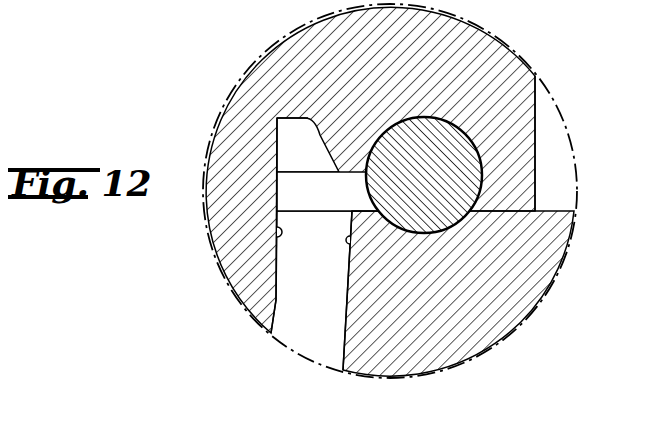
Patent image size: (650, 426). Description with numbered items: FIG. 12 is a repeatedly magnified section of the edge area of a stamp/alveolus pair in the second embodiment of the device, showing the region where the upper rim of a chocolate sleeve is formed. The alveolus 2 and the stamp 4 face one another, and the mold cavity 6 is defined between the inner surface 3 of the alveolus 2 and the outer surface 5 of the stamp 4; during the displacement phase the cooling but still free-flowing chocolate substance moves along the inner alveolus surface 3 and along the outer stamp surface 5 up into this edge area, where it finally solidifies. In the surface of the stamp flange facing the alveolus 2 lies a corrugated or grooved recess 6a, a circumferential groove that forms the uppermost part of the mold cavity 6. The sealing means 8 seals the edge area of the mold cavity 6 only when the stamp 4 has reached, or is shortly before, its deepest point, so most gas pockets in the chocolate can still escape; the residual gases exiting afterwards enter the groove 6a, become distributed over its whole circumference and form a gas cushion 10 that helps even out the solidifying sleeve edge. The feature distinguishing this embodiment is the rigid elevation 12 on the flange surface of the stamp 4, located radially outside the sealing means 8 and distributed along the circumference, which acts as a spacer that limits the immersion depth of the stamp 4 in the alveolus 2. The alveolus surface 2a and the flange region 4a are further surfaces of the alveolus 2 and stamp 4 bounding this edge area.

The alveolus 2 is at (503, 305).
The groove of body 2a is at (354, 242).
The inner surface of the alveolus 3 is at (350, 268).
The stamp 4 is at (549, 113).
The groove of housing 4a is at (276, 234).
The outer surface of the stamp 5 is at (277, 300).
The mold cavity 6 is at (292, 266).
The corrugated or grooved recess 6a is at (305, 121).
The sealing means 8 is at (384, 184).
The gas cushion 10 is at (300, 151).
The rigid elevations 12 is at (513, 154).